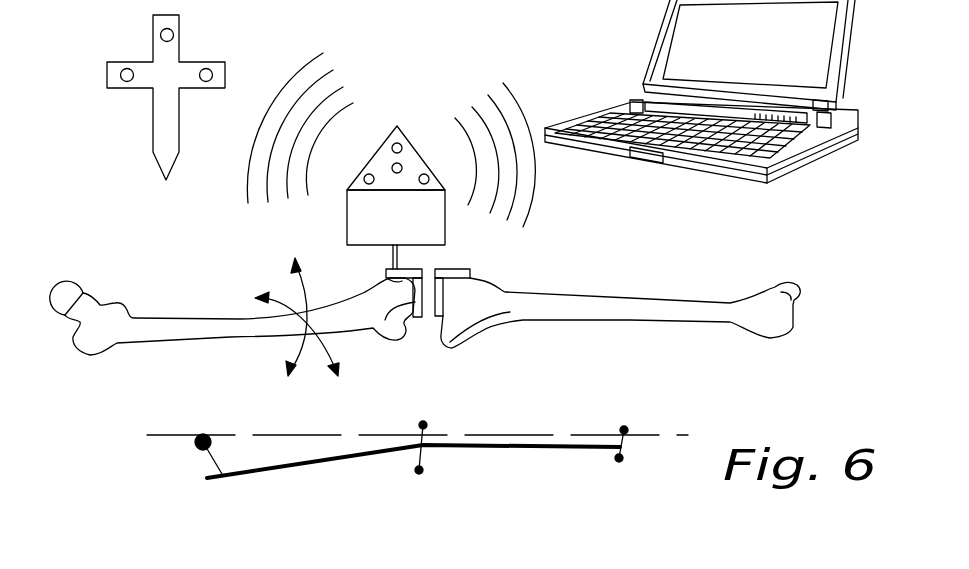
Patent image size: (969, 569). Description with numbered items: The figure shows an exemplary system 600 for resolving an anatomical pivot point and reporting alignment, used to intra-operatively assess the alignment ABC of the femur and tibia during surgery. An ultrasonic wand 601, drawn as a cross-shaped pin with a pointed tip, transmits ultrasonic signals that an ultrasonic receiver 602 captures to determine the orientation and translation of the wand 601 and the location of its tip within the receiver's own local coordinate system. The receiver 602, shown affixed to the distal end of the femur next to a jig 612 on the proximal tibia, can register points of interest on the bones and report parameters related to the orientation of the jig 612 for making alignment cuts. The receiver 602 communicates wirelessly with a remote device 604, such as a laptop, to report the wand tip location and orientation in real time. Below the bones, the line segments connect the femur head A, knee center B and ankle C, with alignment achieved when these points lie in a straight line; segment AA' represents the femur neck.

The system 600 is at (822, 411).
The ultrasonic wand 601 is at (198, 62).
The ultrasonic receiver 602 is at (400, 133).
The remote device 604 is at (667, 37).
The jig 612 is at (468, 268).